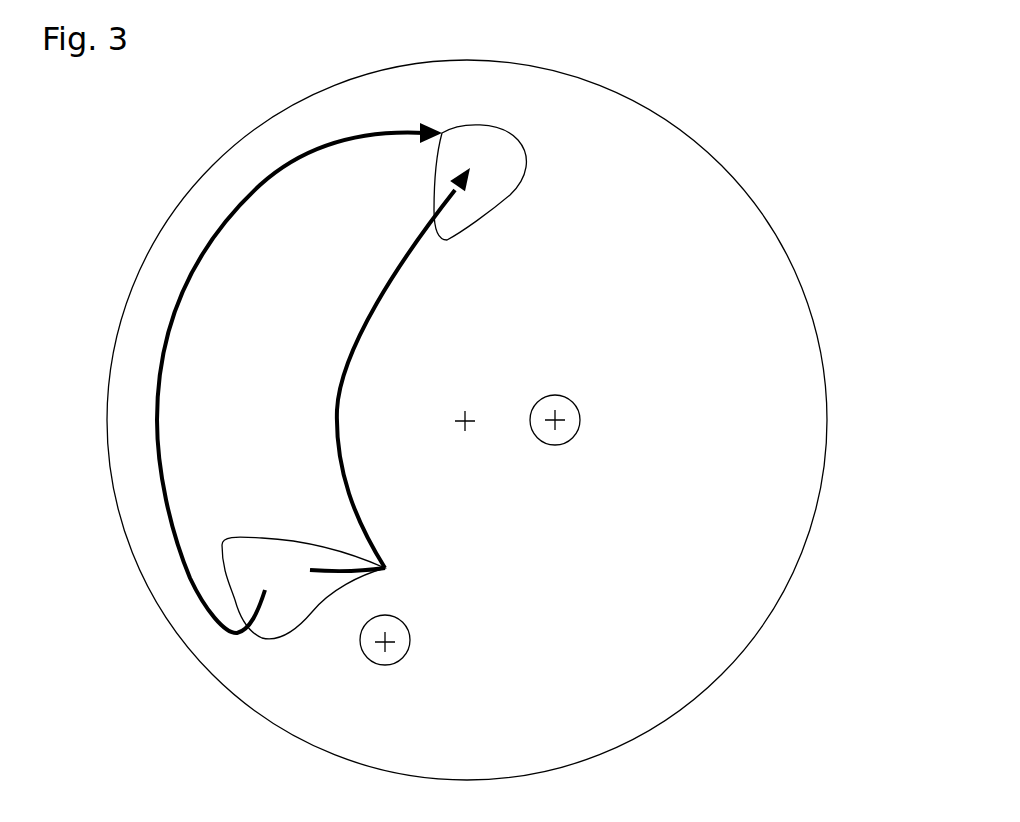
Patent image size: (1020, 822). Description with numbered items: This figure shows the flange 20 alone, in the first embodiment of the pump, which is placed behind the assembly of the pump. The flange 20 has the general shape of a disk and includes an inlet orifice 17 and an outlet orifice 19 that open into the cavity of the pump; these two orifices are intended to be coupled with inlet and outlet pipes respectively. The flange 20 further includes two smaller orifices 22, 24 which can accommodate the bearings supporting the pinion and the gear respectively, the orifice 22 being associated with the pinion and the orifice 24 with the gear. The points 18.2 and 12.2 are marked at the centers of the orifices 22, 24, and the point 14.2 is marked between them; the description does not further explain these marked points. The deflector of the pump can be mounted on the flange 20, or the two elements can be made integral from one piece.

The flange 20 is at (120, 208).
The outlet orifice 19 is at (480, 182).
The inlet orifice 17 is at (303, 588).
The reference point 14.2 is at (462, 418).
The orifice 24 is at (540, 437).
The position point 12.2 is at (557, 422).
The orifice 22 is at (405, 652).
The position point 18.2 is at (388, 640).